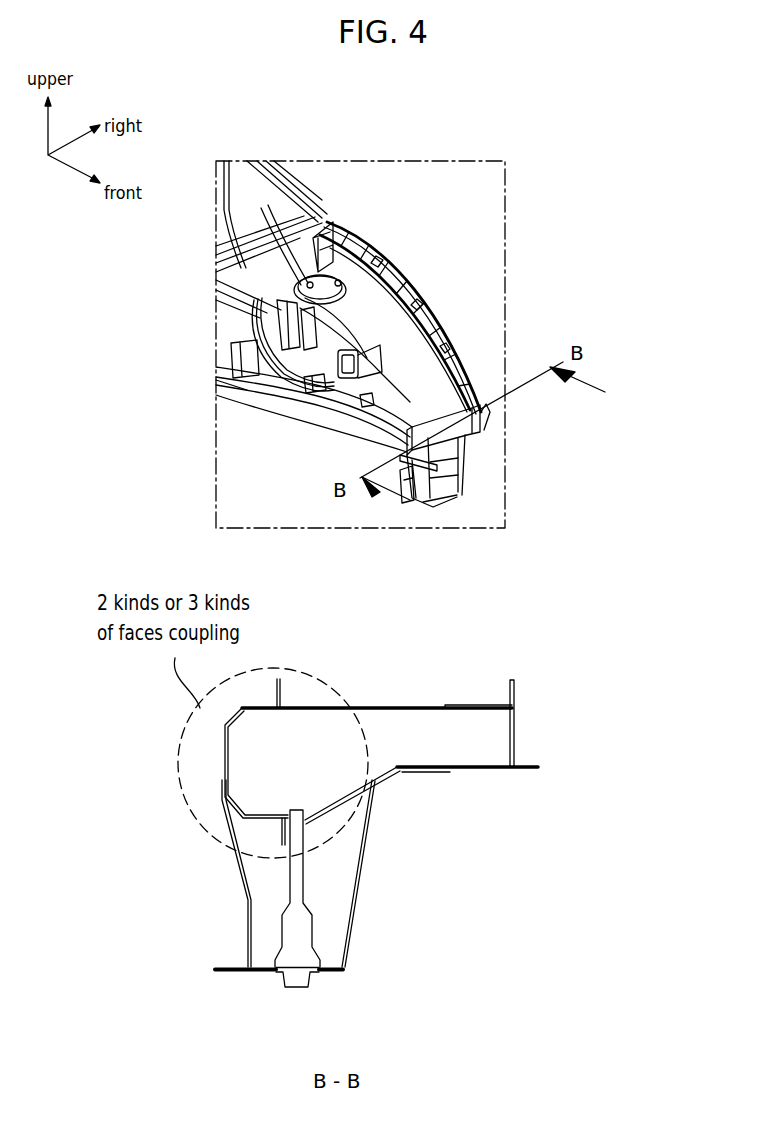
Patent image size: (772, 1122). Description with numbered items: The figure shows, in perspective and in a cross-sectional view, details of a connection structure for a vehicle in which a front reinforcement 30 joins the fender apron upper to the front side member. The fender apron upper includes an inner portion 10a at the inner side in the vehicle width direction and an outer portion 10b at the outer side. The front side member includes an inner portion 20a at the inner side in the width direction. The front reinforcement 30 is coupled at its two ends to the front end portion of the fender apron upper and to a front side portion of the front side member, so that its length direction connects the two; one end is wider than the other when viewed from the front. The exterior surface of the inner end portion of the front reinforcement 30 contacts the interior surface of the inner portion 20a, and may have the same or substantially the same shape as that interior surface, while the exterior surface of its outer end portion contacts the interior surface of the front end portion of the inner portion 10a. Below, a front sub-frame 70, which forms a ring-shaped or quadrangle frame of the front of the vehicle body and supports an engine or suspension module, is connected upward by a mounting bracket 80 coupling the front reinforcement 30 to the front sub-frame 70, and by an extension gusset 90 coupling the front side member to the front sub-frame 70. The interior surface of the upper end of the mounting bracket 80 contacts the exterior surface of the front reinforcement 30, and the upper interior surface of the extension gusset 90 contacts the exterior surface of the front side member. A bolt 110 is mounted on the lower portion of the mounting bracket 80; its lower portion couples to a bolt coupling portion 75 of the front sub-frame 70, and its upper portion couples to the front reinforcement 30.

The inner portion of the fender apron upper 10a is at (428, 336).
The outer portion of the fender apron upper 10b is at (488, 402).
The front reinforcement 30 is at (442, 386).
The inner portion of the front side member 20a is at (368, 438).
The mounting bracket 80 is at (460, 465).
The extension gusset 90 is at (413, 472).
The bolt 110 is at (288, 903).
The front sub-frame 70 is at (260, 973).
The bolt coupling portion 75 is at (283, 982).